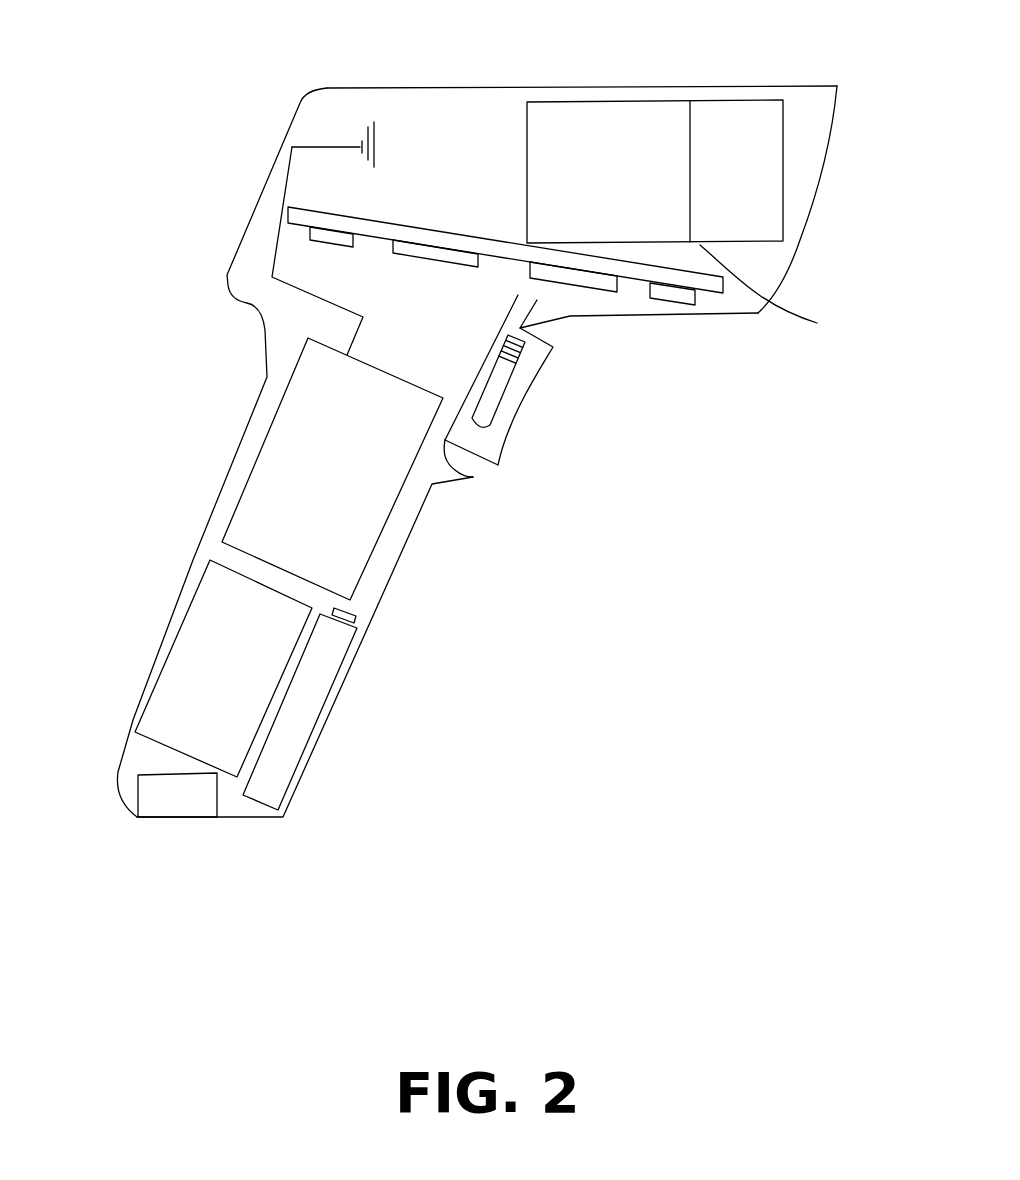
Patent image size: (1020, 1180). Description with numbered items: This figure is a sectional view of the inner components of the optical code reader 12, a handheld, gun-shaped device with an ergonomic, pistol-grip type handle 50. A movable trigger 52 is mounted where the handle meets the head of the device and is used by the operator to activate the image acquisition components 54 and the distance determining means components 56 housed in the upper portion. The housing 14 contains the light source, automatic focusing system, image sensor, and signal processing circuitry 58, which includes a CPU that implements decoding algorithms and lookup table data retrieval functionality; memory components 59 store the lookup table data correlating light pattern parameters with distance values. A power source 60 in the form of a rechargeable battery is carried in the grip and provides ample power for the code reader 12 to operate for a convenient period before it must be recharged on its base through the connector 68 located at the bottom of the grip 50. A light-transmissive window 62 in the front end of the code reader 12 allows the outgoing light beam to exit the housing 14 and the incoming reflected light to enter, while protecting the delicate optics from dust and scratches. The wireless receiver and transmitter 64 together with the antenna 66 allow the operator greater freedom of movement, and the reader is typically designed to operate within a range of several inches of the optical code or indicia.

The optical code reader 12 is at (553, 87).
The housing 14 is at (247, 305).
The pistol-grip type handle 50 is at (348, 673).
The movable trigger 52 is at (510, 418).
The image acquisition components 54 is at (786, 295).
The distance determining means components 56 is at (747, 100).
The signal processing circuitry 58 is at (402, 225).
The memory components 59 is at (172, 642).
The power source 60 is at (306, 753).
The light-transmissive window 62 is at (817, 188).
The wireless receiver and transmitter 64 is at (380, 537).
The antenna 66 is at (333, 147).
The connector 68 is at (138, 782).